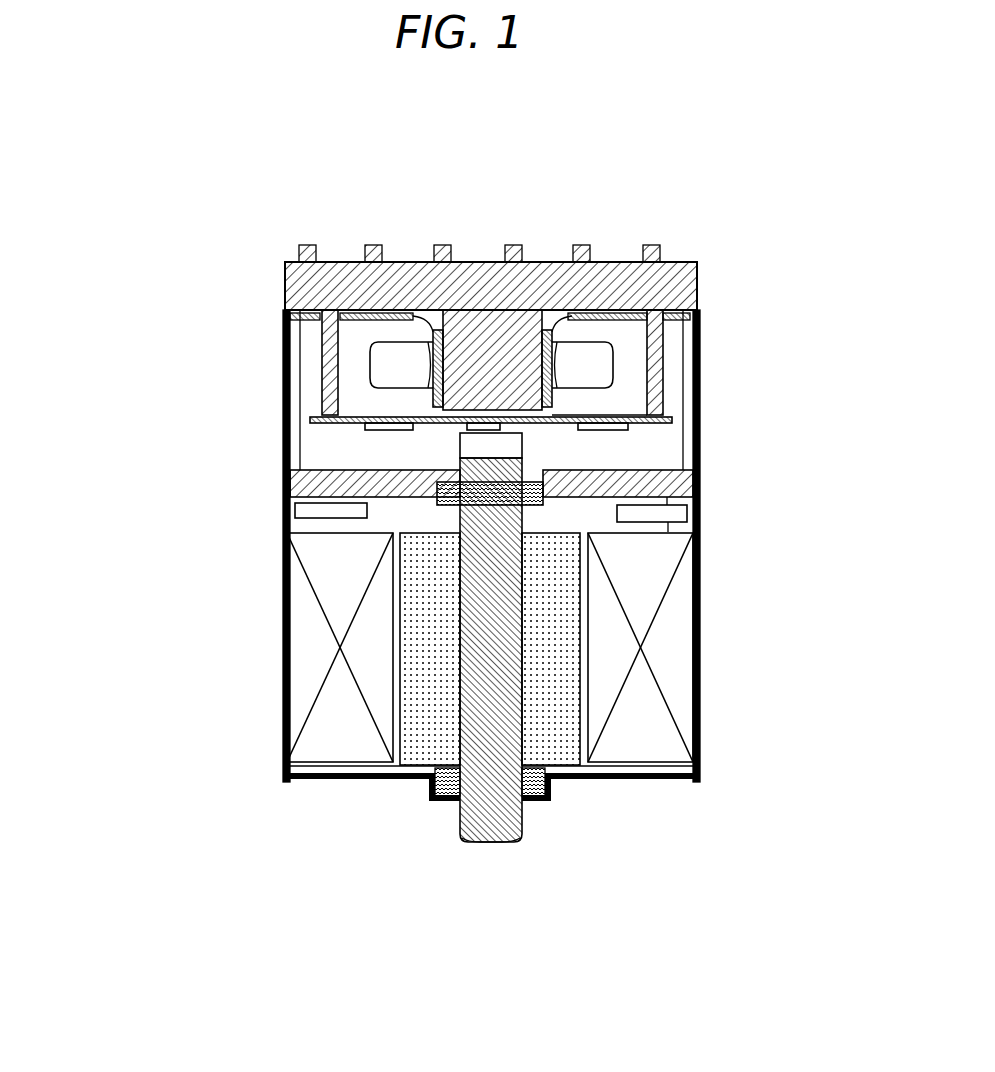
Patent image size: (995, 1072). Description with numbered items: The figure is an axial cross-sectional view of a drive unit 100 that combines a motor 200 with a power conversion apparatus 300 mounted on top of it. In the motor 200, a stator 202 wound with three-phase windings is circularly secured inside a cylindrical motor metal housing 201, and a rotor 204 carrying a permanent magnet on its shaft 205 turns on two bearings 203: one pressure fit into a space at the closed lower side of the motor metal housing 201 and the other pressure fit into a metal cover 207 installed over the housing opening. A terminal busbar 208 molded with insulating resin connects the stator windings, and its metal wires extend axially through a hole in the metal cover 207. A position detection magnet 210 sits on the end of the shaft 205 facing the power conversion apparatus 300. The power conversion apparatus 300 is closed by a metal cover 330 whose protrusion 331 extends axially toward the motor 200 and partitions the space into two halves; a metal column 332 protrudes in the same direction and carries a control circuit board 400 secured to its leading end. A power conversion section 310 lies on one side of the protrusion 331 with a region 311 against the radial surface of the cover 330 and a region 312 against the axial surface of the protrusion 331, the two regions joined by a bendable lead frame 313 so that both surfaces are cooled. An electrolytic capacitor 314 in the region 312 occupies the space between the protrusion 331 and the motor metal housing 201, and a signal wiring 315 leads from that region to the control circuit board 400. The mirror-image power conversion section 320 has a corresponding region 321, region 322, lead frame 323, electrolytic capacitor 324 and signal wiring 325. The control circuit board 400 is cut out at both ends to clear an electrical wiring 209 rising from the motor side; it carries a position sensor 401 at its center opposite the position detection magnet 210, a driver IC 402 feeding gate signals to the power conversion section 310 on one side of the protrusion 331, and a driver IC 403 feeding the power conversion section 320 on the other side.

The drive unit 100 is at (230, 208).
The power conversion apparatus 300 is at (142, 235).
The motor 200 is at (142, 447).
The cover 330 is at (290, 284).
The metal column 332 is at (325, 262).
The region 312 is at (441, 262).
The region 311 is at (357, 262).
The lead frame 313 is at (420, 262).
The region 321 is at (697, 295).
The lead frame 323 is at (575, 313).
The power conversion section 310 is at (310, 345).
The power conversion section 320 is at (680, 340).
The protrusion 331 is at (482, 290).
The region 322 is at (547, 310).
The electrolytic capacitor 314 is at (390, 385).
The electrolytic capacitor 324 is at (590, 375).
The signal wiring 325 is at (563, 412).
The control circuit board 400 is at (330, 402).
The position sensor 401 is at (523, 458).
The driver IC 402 is at (370, 425).
The driver IC 403 is at (578, 425).
The electrical wiring 209 is at (285, 450).
The metal cover 207 is at (700, 500).
The signal wiring 315 is at (285, 482).
The position detection magnet 210 is at (560, 498).
The bearing 203 is at (520, 517).
The shaft 205 is at (512, 845).
The terminal busbar 208 is at (292, 515).
The stator 202 is at (290, 700).
The rotor 204 is at (545, 750).
The motor metal housing 201 is at (297, 787).